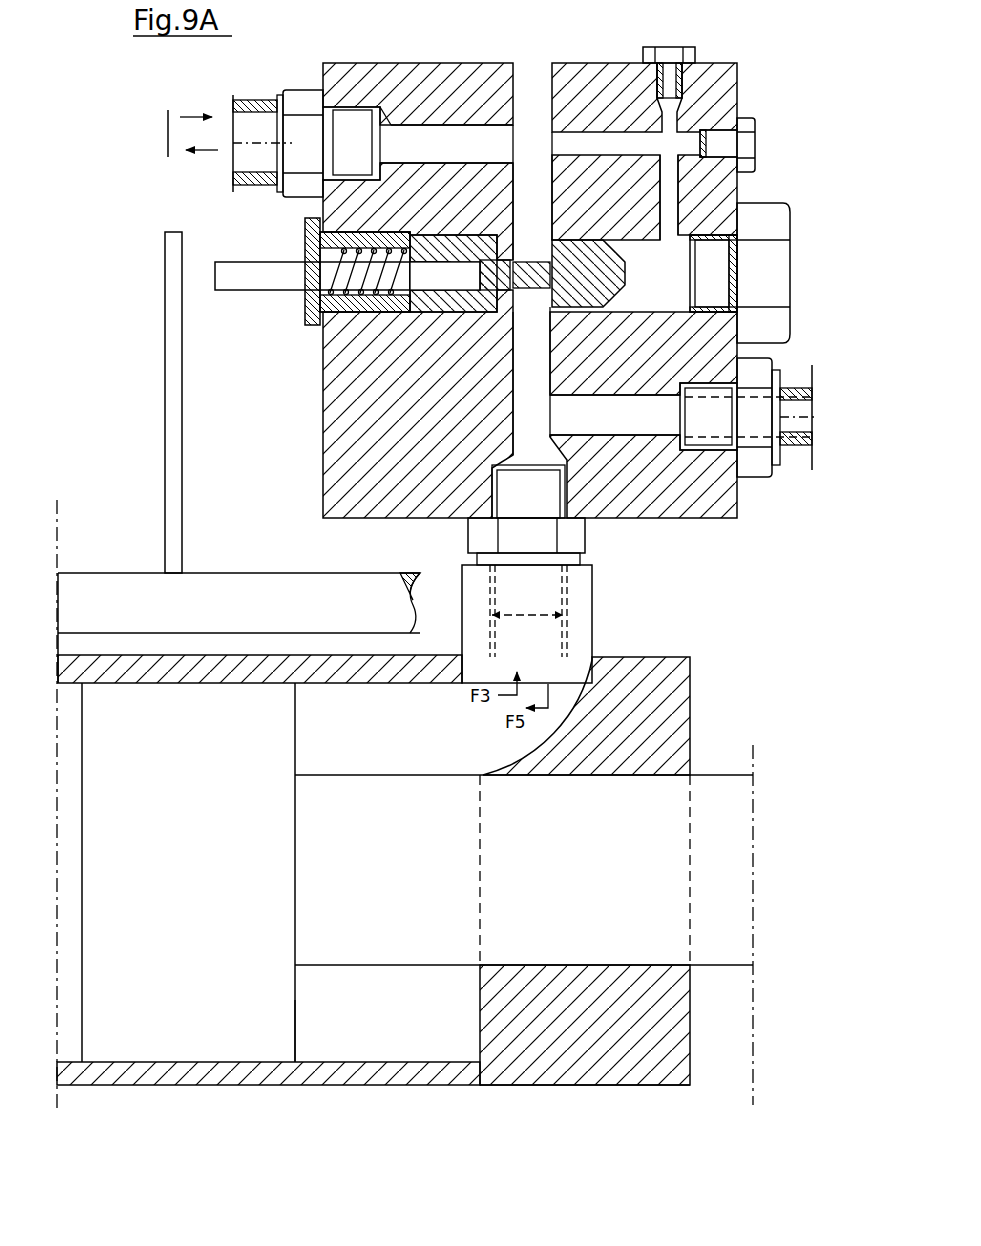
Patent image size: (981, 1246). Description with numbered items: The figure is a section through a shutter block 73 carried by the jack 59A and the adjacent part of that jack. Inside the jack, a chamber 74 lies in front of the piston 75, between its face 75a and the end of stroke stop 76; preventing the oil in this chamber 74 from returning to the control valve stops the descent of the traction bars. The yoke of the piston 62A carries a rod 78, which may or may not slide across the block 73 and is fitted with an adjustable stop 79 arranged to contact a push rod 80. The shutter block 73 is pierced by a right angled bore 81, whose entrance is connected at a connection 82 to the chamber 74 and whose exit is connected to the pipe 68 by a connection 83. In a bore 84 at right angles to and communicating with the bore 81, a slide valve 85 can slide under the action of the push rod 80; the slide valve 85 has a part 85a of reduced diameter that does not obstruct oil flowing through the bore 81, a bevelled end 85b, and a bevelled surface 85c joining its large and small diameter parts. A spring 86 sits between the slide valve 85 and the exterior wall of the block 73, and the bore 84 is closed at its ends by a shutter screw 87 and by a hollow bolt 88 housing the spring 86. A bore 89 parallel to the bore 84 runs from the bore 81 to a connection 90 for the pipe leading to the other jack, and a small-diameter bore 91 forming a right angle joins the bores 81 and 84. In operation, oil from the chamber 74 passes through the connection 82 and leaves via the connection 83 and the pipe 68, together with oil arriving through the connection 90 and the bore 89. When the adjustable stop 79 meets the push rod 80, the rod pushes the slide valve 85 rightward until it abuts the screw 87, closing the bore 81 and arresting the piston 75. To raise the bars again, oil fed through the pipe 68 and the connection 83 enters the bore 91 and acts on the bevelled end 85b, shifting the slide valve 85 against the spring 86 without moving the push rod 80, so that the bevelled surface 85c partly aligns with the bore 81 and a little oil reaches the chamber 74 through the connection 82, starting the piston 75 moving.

The shutter block 73 is at (318, 472).
The slide valve 85 is at (428, 228).
The part of reduced diameter 85a is at (522, 128).
The bevelled surface 85c is at (550, 255).
The right angled bore 81 is at (454, 133).
The bore forming a right angle 91 is at (640, 140).
The bevelled end 85b is at (742, 124).
The connection 83 is at (252, 116).
The pipe 68 is at (173, 133).
The push rod 80 is at (236, 265).
The hollow bolt 88 is at (312, 310).
The spring 86 is at (347, 297).
The bore 84 is at (677, 293).
The shutter screw 87 is at (765, 211).
The connection 90 is at (795, 449).
The bore 89 is at (642, 420).
The connection 82 is at (614, 607).
The rod 78 is at (320, 578).
The adjustable stop 79 is at (182, 354).
The chamber 74 is at (403, 1047).
The piston 75 is at (453, 872).
The face 75a is at (295, 1038).
The piston 62A is at (585, 870).
The end of stroke stop 76 is at (480, 985).
The jack 59A is at (562, 1092).